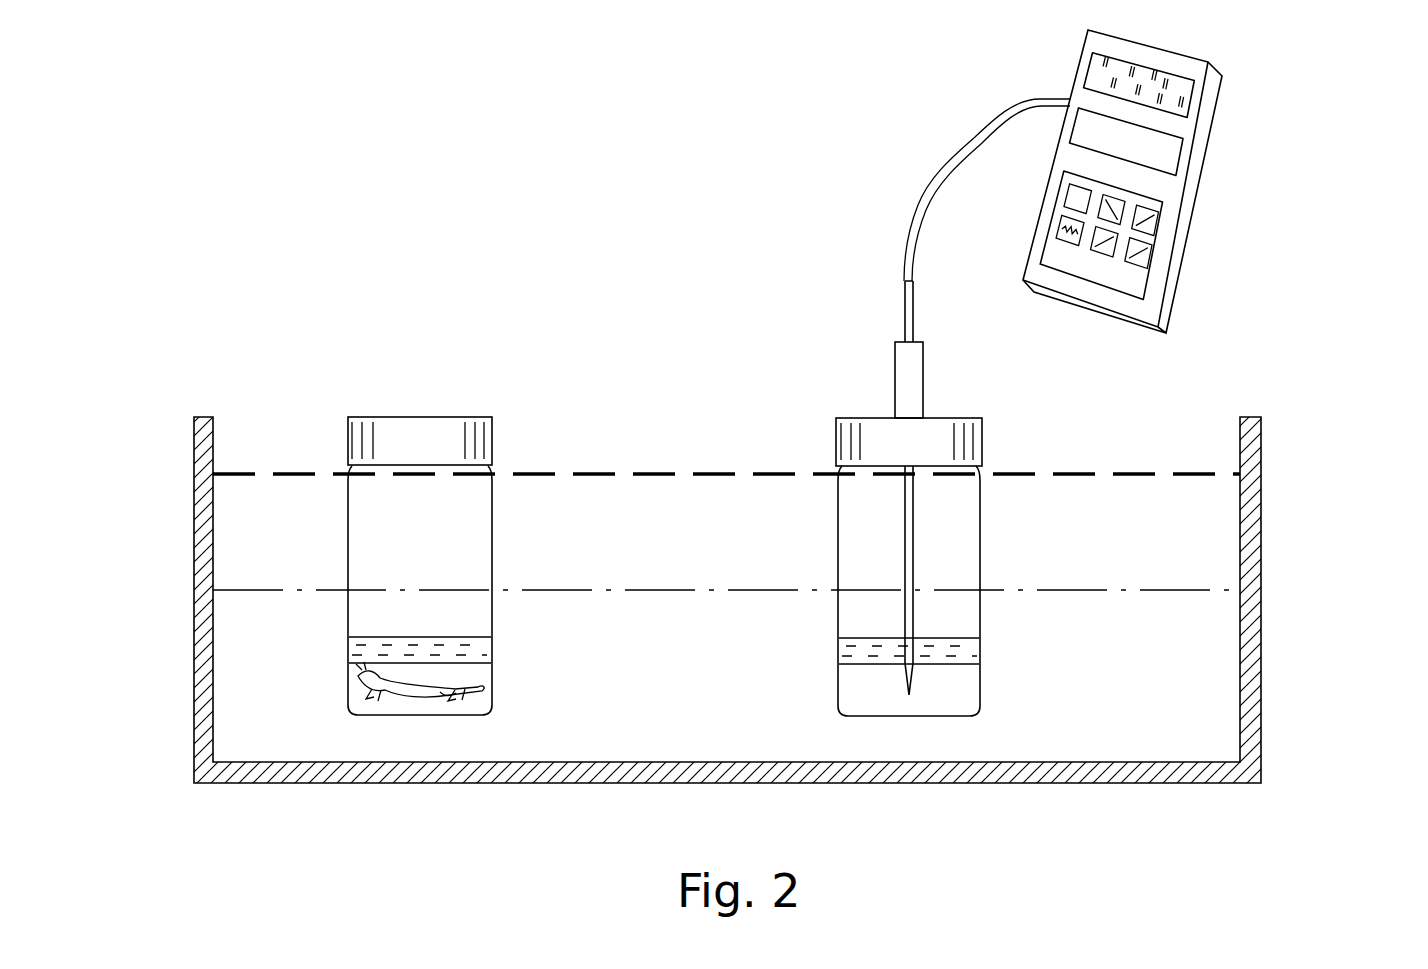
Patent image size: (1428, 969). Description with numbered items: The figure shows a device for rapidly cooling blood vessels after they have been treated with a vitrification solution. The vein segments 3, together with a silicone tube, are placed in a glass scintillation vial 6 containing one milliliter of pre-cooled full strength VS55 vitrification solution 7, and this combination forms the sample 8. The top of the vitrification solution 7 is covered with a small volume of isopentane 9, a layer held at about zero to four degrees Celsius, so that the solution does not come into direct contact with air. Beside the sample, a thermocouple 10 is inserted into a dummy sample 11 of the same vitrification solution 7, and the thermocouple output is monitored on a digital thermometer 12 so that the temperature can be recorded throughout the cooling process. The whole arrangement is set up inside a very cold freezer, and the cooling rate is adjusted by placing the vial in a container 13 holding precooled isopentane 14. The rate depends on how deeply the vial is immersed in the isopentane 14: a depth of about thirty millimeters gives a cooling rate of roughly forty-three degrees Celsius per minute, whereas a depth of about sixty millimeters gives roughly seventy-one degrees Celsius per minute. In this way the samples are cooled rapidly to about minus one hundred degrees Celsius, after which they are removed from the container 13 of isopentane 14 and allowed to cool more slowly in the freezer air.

The vein segments 3 is at (443, 702).
The glass scintillation vial 6 is at (484, 532).
The vitrification solution 7 is at (483, 677).
The sample 8 is at (403, 417).
The 2-methylbutane 9 is at (475, 647).
The thermocouple 10 is at (927, 178).
The dummy sample 11 is at (853, 417).
The digital thermometer 12 is at (1182, 227).
The container 13 is at (195, 447).
The 2-methylbutane 14 is at (253, 561).